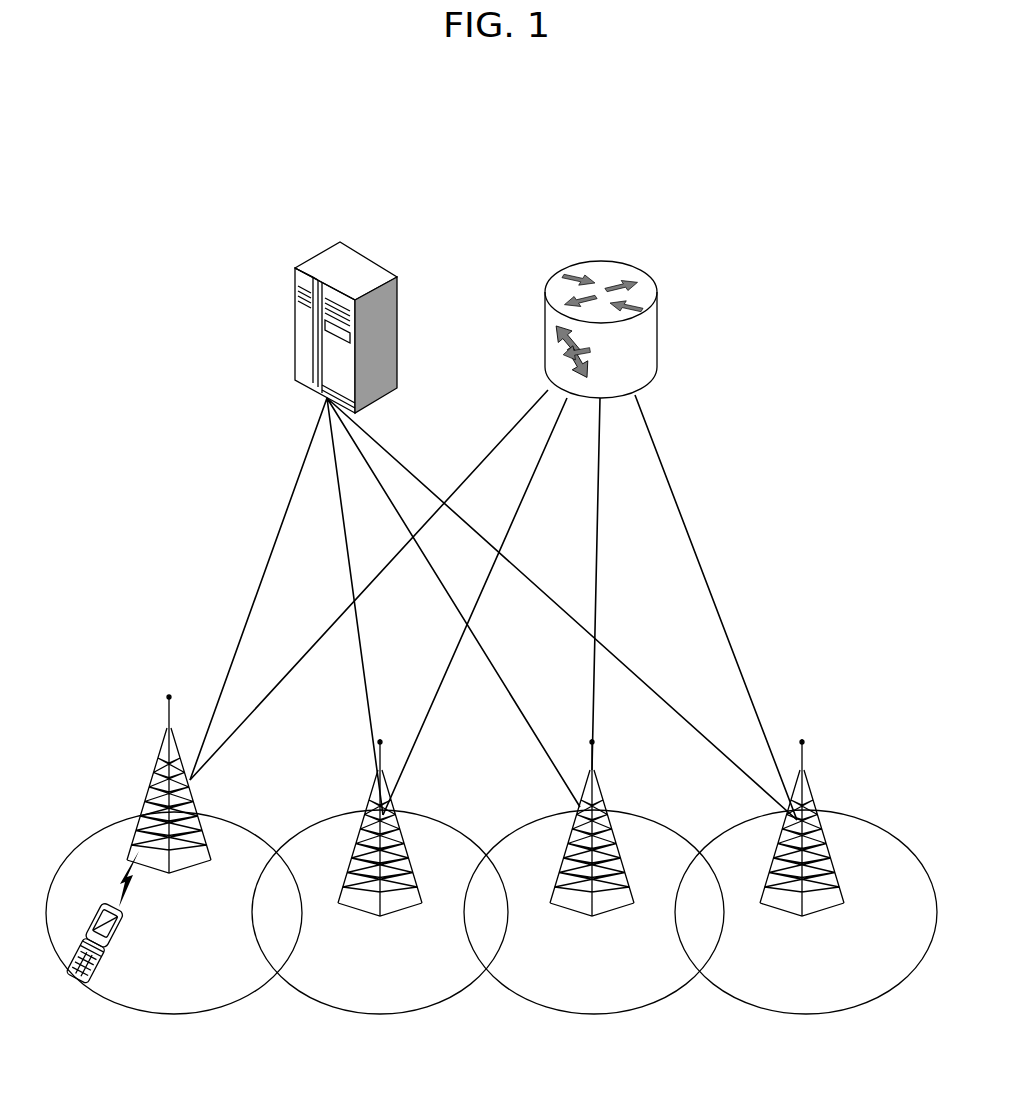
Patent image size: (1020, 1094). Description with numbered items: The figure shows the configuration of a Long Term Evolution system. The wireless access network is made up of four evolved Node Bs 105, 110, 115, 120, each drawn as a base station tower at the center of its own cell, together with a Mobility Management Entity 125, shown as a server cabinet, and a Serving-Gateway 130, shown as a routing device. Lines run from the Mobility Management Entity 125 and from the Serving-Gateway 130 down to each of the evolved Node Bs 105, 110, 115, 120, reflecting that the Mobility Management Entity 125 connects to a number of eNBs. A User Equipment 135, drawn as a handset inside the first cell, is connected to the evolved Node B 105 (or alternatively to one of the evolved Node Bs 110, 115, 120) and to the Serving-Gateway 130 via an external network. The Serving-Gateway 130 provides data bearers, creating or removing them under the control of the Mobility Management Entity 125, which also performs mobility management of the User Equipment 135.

The evolved Node B 105 is at (160, 762).
The evolved Node B 110 is at (374, 798).
The evolved Node B 115 is at (602, 795).
The evolved Node B 120 is at (812, 795).
The Mobility Management Entity 125 is at (330, 267).
The Serving-Gateway 130 is at (598, 270).
The User Equipment 135 is at (117, 938).